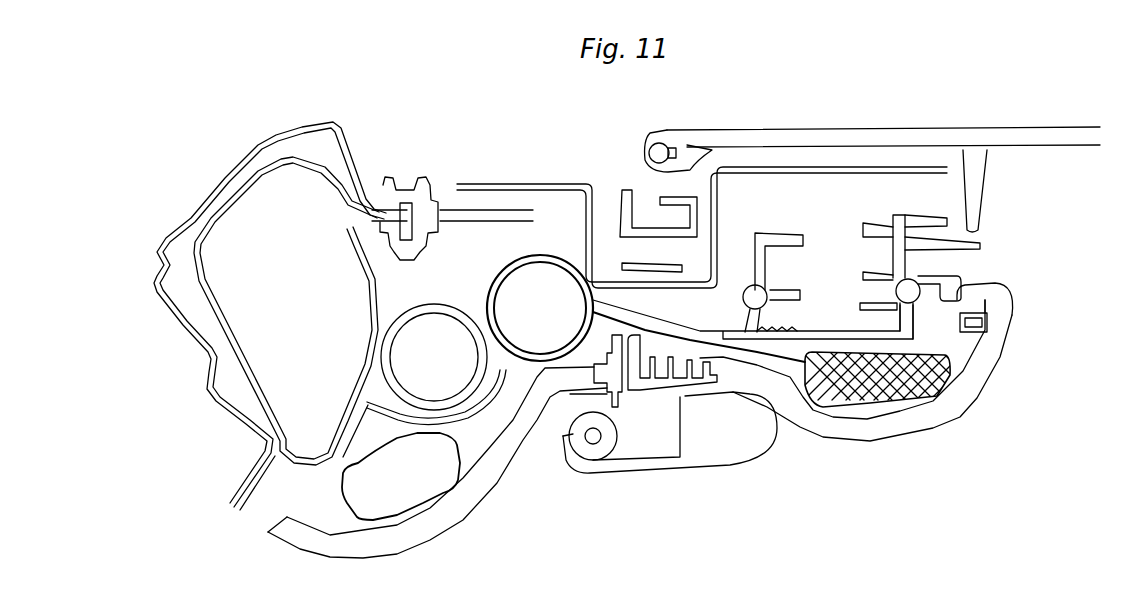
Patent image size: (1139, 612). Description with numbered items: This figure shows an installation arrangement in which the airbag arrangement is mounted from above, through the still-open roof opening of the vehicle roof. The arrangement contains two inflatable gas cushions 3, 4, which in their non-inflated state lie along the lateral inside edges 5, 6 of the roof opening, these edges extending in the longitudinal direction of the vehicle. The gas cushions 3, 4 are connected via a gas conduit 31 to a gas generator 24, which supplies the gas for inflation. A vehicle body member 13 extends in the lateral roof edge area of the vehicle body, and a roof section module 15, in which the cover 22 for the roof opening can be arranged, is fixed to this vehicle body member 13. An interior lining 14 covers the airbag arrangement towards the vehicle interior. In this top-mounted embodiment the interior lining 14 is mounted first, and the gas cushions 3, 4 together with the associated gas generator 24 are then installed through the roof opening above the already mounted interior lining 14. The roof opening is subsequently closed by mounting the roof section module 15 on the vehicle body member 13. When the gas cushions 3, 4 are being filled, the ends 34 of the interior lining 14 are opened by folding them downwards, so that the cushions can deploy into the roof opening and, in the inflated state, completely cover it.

The vehicle body member 13 is at (340, 193).
The roof section module 15 is at (691, 113).
The cover 22 is at (932, 130).
The gas generator 24 is at (540, 340).
The lateral inside edge 5 is at (983, 277).
The lateral inside edge 6 is at (1011, 260).
The ends of interior lining 34 is at (1002, 332).
The interior lining 14 is at (872, 423).
The inflatable gas cushion 3 is at (892, 423).
The inflatable gas cushion 4 is at (925, 400).
The gas conduit 31 is at (740, 330).